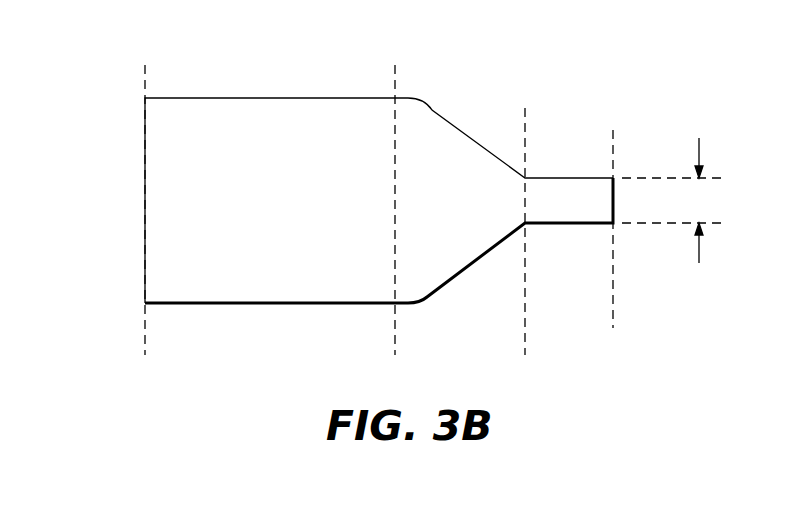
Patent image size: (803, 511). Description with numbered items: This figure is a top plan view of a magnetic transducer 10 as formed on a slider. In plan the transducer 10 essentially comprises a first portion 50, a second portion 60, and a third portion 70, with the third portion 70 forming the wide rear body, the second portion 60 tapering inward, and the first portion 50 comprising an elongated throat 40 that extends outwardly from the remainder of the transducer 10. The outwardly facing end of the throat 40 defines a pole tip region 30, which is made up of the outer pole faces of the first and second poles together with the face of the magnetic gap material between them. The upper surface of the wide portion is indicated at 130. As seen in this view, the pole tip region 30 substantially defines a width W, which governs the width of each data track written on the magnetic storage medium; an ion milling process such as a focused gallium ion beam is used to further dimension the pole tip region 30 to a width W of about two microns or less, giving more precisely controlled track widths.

The magnetic transducer 10 is at (124, 326).
The third portion 70 is at (192, 88).
The upper surface of input section 130 is at (283, 126).
The second portion 60 is at (465, 118).
The first portion 50 is at (577, 122).
The throat 40 is at (586, 196).
The pole tip region 30 is at (617, 200).
The width W is at (672, 200).